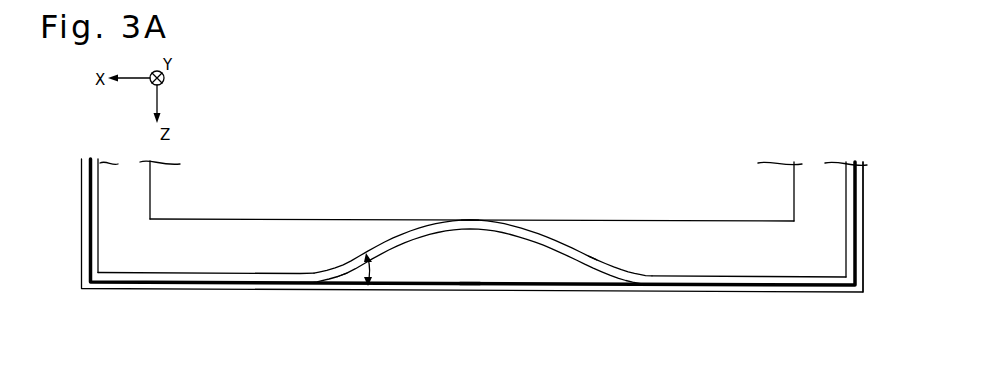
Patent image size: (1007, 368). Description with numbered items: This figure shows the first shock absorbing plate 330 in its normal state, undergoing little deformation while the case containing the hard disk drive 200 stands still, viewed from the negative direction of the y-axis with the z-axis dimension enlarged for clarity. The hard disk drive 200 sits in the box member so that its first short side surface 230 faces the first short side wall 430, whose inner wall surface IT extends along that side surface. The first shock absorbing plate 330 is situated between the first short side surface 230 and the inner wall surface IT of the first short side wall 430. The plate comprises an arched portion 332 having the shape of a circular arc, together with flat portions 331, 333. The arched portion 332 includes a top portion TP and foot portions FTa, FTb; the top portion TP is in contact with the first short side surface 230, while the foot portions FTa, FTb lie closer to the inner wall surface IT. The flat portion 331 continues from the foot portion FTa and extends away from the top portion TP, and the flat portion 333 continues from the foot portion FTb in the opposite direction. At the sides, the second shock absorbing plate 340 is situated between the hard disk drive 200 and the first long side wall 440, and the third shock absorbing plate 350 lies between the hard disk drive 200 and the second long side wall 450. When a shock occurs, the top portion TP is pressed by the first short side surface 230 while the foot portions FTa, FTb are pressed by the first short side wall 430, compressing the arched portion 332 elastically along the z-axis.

The hard disk drive 200 is at (323, 193).
The first short side surface 230 is at (235, 220).
The first shock absorbing plate 330 is at (472, 252).
The flat portion 331 is at (263, 272).
The arched portion 332 is at (371, 250).
The flat portion 333 is at (715, 275).
The second shock absorbing plate 340 is at (846, 223).
The third shock absorbing plate 350 is at (98, 221).
The first short side wall 430 is at (207, 290).
The first long side wall 440 is at (862, 210).
The second long side wall 450 is at (82, 208).
The top portion TP is at (470, 220).
The foot portion FTa is at (343, 276).
The foot portion FTb is at (592, 262).
The inner wall surface IT is at (470, 278).